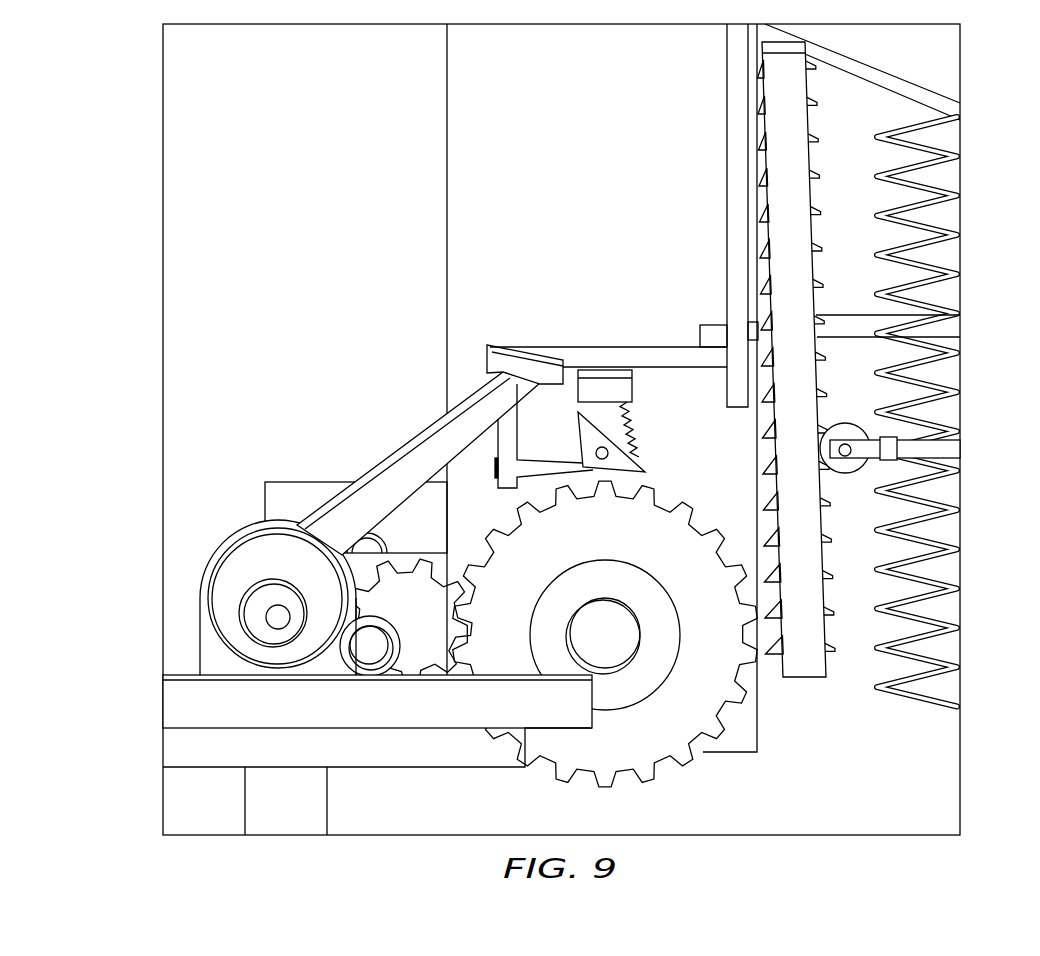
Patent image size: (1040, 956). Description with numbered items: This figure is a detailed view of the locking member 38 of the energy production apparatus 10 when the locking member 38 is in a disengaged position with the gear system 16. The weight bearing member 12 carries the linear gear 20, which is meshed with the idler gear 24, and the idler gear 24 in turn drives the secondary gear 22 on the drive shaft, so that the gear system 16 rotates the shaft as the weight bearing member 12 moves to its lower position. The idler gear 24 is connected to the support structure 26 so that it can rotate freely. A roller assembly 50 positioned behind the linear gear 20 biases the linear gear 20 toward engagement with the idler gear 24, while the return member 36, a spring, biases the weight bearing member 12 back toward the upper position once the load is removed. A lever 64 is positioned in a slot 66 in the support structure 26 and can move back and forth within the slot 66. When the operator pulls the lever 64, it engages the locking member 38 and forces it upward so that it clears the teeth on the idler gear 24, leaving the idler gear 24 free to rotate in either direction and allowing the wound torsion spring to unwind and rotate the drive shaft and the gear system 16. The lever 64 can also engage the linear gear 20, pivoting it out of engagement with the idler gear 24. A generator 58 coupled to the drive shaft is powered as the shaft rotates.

The energy production apparatus 10 is at (243, 217).
The weight bearing member 12 is at (938, 64).
The gear system 16 is at (701, 773).
The linear gear 20 is at (805, 665).
The secondary gear 22 is at (418, 657).
The idler gear 24 is at (590, 760).
The support structure 26 is at (468, 93).
The return member 36 is at (955, 626).
The locking member 38 is at (590, 438).
The roller assembly 50 is at (942, 452).
The generator 58 is at (252, 557).
The lever 64 is at (505, 363).
The slot 66 is at (715, 333).